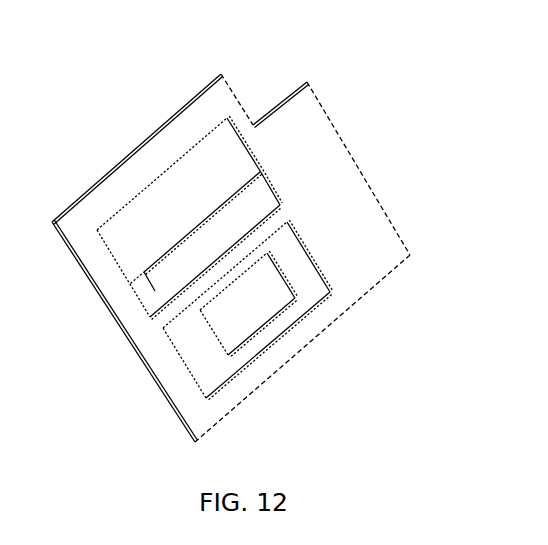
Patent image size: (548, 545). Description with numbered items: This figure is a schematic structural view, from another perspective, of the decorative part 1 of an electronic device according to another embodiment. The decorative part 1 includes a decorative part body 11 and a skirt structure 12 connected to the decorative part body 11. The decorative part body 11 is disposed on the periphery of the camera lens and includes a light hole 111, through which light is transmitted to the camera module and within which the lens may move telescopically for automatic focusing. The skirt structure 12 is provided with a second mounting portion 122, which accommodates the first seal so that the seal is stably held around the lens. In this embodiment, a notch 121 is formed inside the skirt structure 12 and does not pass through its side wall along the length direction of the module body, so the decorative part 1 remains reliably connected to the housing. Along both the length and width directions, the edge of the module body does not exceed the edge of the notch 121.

The decorative part 1 is at (221, 32).
The decorative part body 11 is at (165, 277).
The light hole 111 is at (258, 299).
The skirt structure 12 is at (360, 207).
The notch 121 is at (158, 192).
The second mounting portion 122 is at (210, 368).